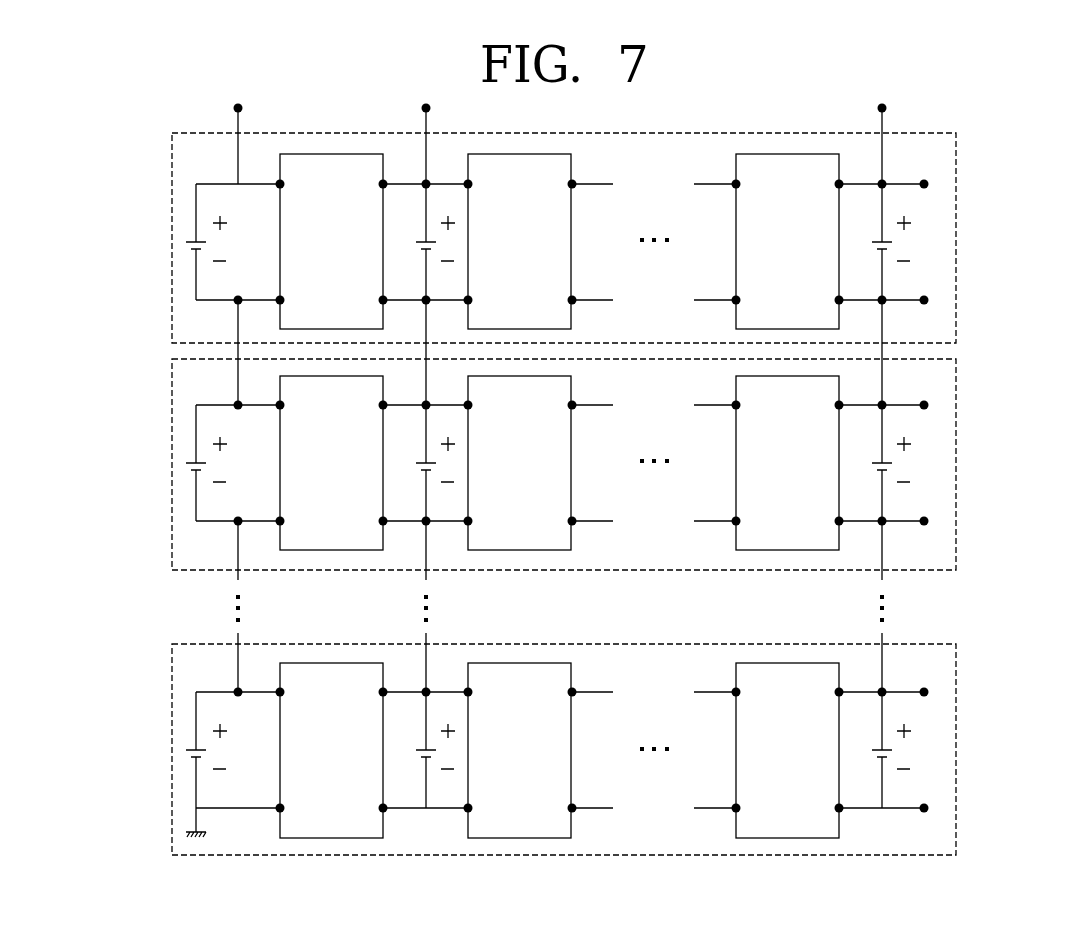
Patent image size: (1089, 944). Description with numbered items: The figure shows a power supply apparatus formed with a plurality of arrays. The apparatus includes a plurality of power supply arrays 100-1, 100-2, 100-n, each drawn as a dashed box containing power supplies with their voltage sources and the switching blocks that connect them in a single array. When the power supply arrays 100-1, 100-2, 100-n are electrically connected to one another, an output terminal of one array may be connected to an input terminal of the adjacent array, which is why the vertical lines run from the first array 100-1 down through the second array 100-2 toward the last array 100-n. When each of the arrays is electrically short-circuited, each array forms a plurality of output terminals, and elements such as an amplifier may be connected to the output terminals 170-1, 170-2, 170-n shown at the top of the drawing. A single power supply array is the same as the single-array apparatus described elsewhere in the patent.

The output terminal 170-1 is at (243, 108).
The output terminal 170-2 is at (431, 108).
The output terminal 170-n is at (887, 108).
The power supply array 100-1 is at (957, 236).
The power supply array 100-2 is at (957, 464).
The power supply array 100-n is at (957, 748).